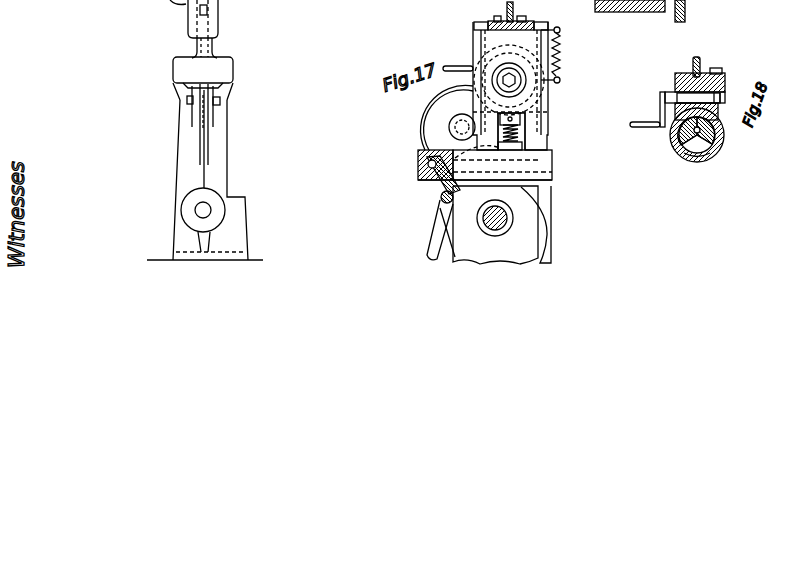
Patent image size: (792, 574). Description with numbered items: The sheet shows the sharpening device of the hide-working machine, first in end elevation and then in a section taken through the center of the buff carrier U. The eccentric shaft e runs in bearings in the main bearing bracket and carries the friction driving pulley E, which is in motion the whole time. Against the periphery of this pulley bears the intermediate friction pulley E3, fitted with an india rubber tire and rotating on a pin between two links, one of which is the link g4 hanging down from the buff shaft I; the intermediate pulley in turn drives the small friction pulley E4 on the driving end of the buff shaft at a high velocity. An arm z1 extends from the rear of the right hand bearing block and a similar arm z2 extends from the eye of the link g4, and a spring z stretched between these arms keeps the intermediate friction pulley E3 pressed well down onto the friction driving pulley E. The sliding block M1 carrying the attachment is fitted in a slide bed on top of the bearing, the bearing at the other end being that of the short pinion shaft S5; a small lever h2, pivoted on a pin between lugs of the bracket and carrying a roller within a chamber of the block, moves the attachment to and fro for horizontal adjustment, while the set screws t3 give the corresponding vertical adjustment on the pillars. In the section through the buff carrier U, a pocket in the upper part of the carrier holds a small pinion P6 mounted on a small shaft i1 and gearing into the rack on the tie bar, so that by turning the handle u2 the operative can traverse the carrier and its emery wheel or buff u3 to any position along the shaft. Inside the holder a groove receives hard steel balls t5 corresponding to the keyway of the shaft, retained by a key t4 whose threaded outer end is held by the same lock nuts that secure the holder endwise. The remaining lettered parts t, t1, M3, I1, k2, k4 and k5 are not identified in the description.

In FIG. 17, the rod t is at (218, 13).
In FIG. 17, the clamp t1 is at (478, 27).
In FIG. 17, the set screw t3 is at (512, 143).
In FIG. 18, the key t4 is at (672, 140).
In FIG. 18, the hard steel balls t5 is at (686, 166).
In FIG. 17, the sliding block M1 is at (203, 78).
In FIG. 17, the block M3 is at (550, 153).
In FIG. 17, the small lever h2 is at (208, 152).
In FIG. 17, the short pinion shaft S5 is at (200, 212).
In FIG. 17, the lever or handle u2 is at (466, 68).
In FIG. 18, the lever or handle u2 is at (660, 124).
In FIG. 17, the emery wheel or buff u3 is at (686, 18).
In FIG. 17, the screw I1 is at (513, 10).
In FIG. 18, the screw I1 is at (700, 62).
In FIG. 18, the buff shaft I is at (718, 152).
In FIG. 18, the small shaft i1 is at (699, 106).
In FIG. 17, the friction driving pulley E is at (545, 224).
In FIG. 17, the intermediate friction pulley E3 is at (446, 117).
In FIG. 17, the friction pulley E4 is at (530, 90).
In FIG. 17, the eccentric shaft e is at (498, 228).
In FIG. 17, the link g4 is at (452, 128).
In FIG. 17, the lever k2 is at (431, 230).
In FIG. 17, the block k4 is at (420, 165).
In FIG. 17, the pin k5 is at (430, 160).
In FIG. 17, the spring z is at (560, 60).
In FIG. 17, the arm z1 is at (560, 30).
In FIG. 17, the arm z2 is at (560, 80).
In FIG. 18, the small pinion P6 is at (725, 85).
In FIG. 18, the buff carrier U is at (724, 135).